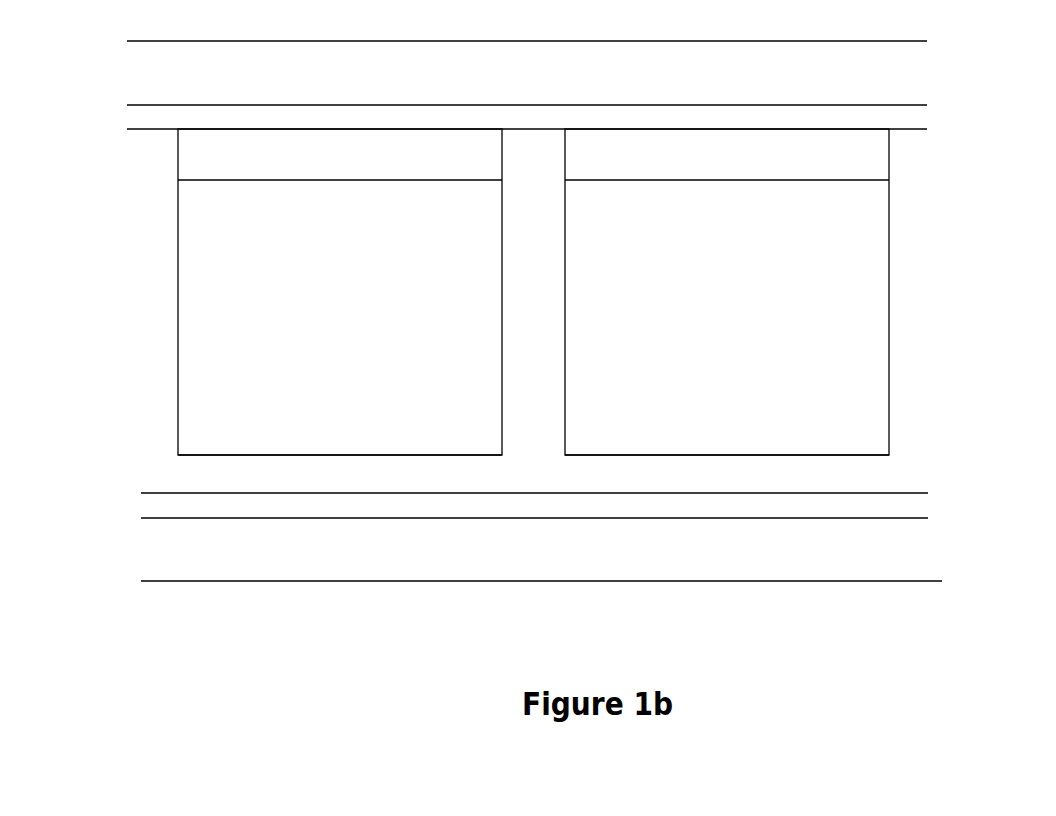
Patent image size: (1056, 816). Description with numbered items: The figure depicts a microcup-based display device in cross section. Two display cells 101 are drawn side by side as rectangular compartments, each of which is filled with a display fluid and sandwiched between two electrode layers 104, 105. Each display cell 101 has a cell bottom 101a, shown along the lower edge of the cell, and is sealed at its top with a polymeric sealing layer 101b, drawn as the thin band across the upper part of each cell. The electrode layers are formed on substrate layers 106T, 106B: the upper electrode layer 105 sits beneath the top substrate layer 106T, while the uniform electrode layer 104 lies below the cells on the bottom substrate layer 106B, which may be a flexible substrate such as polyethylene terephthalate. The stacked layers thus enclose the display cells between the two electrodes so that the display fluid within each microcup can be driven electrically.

The display cell 101 is at (533, 292).
The cell bottom 101a is at (228, 469).
The polymeric sealing layer 101b is at (213, 155).
The electrode layer 104 is at (904, 504).
The electrode layer 105 is at (904, 117).
The substrate layer 106T is at (904, 79).
The substrate layer 106B is at (904, 554).